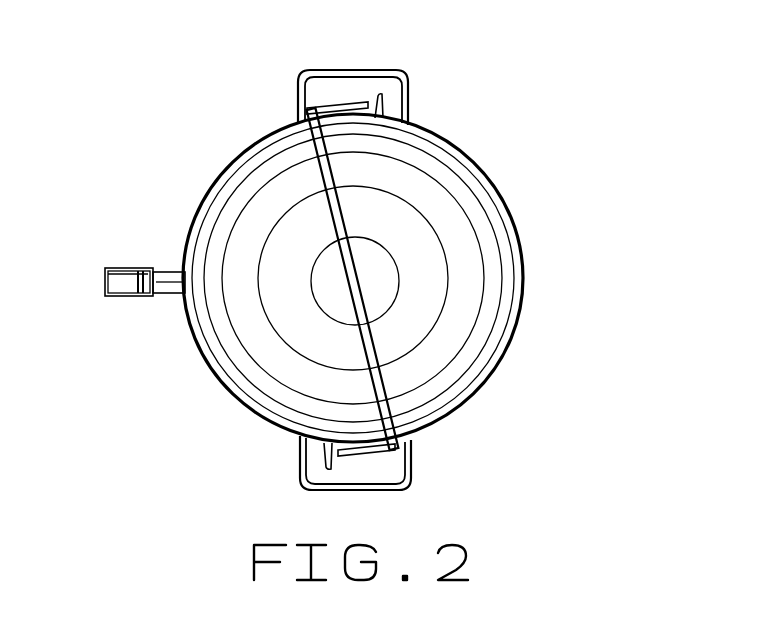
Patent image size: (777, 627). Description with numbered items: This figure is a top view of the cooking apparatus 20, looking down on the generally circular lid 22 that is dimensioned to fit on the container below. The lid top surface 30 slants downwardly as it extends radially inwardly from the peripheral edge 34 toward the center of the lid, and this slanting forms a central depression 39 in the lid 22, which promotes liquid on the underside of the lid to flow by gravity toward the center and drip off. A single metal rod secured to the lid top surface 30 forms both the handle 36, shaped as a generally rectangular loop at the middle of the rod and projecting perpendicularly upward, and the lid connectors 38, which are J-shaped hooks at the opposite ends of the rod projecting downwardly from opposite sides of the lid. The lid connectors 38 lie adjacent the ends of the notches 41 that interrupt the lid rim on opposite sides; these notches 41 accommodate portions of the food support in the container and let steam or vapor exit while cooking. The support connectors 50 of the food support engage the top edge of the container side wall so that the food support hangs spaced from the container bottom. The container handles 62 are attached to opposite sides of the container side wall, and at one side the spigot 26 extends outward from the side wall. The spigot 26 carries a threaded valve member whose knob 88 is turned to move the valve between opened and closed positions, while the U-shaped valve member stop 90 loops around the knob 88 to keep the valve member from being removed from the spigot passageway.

The cooking apparatus 20 is at (558, 128).
The lid 22 is at (483, 188).
The spigot 26 is at (170, 268).
The lid top surface 30 is at (497, 240).
The peripheral edge 34 is at (455, 140).
The handle 36 is at (370, 338).
The lid connectors 38 is at (340, 105).
The central depression 39 is at (388, 280).
The notches 41 is at (322, 151).
The support connectors 50 is at (383, 108).
The handles 62 is at (370, 70).
The knob 88 is at (138, 281).
The valve member stop 90 is at (105, 283).